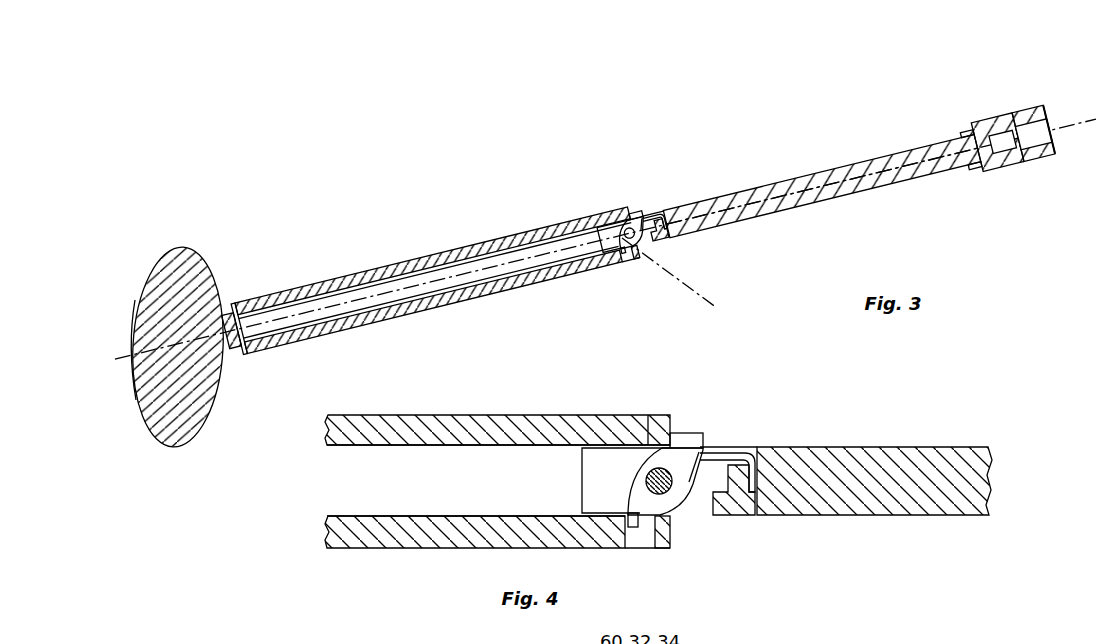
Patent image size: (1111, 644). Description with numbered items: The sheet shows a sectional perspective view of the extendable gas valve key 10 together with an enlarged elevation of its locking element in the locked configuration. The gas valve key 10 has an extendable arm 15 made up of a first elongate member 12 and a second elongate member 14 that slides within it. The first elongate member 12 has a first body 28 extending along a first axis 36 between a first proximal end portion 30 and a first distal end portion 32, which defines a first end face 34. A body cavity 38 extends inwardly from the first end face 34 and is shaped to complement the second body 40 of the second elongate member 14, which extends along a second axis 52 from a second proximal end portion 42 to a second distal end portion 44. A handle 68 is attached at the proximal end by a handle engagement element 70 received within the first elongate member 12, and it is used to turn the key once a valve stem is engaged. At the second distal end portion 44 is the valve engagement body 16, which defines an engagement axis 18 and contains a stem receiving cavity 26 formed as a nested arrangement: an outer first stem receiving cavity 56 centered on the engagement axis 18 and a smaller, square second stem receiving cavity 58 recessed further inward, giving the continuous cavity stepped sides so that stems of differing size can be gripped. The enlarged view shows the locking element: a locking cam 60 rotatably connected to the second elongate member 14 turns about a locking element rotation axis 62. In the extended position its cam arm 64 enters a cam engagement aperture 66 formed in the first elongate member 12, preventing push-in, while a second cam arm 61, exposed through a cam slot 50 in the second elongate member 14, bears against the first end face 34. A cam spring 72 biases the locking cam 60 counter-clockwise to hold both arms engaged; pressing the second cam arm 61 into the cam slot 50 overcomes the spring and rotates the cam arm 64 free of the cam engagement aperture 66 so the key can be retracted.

In FIG. 3, the gas valve key 10 is at (323, 196).
In FIG. 3, the first elongate member 12 is at (527, 221).
In FIG. 3, the second elongate member 14 is at (690, 189).
In FIG. 3, the extendable arm 15 is at (636, 124).
In FIG. 3, the valve engagement body 16 is at (990, 116).
In FIG. 3, the engagement axis 18 is at (1032, 114).
In FIG. 3, the stem receiving cavity 26 is at (1056, 122).
In FIG. 3, the first body 28 is at (412, 258).
In FIG. 4, the first body 28 is at (390, 538).
In FIG. 3, the first proximal end portion 30 is at (246, 300).
In FIG. 3, the first distal end portion 32 is at (629, 206).
In FIG. 4, the first distal end portion 32 is at (653, 426).
In FIG. 4, the first end face 34 is at (675, 426).
In FIG. 3, the first axis 36 is at (316, 298).
In FIG. 3, the body cavity 38 is at (362, 268).
In FIG. 4, the body cavity 38 is at (340, 482).
In FIG. 3, the second body 40 is at (818, 172).
In FIG. 4, the second body 40 is at (890, 510).
In FIG. 4, the second proximal end portion 42 is at (588, 479).
In FIG. 3, the second distal end portion 44 is at (962, 126).
In FIG. 4, the cam slot 50 is at (722, 452).
In FIG. 3, the second axis 52 is at (742, 192).
In FIG. 3, the first stem receiving cavity 56 is at (1032, 160).
In FIG. 3, the second stem receiving cavity 58 is at (998, 166).
In FIG. 3, the locking cam 60 is at (586, 212).
In FIG. 4, the locking cam 60 is at (636, 462).
In FIG. 3, the second cam arm 61 is at (634, 222).
In FIG. 4, the second cam arm 61 is at (705, 440).
In FIG. 3, the locking element rotation axis 62 is at (700, 294).
In FIG. 3, the cam arm 64 is at (632, 264).
In FIG. 4, the cam arm 64 is at (633, 530).
In FIG. 3, the cam engagement aperture 66 is at (613, 272).
In FIG. 4, the cam engagement aperture 66 is at (662, 542).
In FIG. 3, the handle 68 is at (187, 430).
In FIG. 3, the handle engagement element 70 is at (249, 350).
In FIG. 4, the cam spring 72 is at (740, 452).